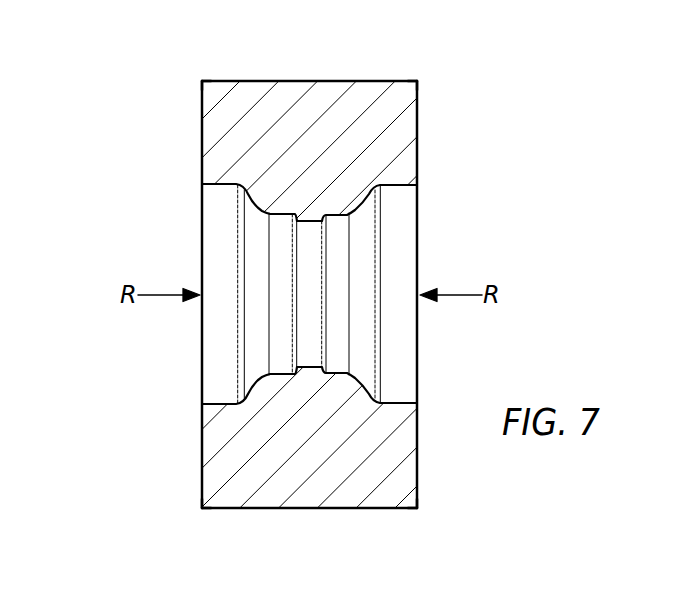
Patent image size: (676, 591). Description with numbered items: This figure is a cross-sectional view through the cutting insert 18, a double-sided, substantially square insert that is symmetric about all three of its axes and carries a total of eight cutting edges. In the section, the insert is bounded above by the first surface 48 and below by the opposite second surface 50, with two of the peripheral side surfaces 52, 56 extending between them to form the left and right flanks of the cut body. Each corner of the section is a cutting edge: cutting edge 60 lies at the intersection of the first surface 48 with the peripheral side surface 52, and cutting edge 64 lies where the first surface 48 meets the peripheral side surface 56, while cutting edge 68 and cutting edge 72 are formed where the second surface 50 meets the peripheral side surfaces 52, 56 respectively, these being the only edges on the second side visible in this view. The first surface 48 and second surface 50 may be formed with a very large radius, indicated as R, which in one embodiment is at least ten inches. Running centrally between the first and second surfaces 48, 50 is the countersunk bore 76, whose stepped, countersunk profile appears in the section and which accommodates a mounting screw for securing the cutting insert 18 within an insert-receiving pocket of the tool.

The cutting insert 18 is at (88, 175).
The first surface 48 is at (420, 155).
The second surface 50 is at (200, 142).
The peripheral side surface 52 is at (333, 72).
The peripheral side surface 56 is at (277, 510).
The cutting edge 60 is at (417, 80).
The cutting edge 64 is at (417, 508).
The cutting edge 68 is at (202, 80).
The cutting edge 72 is at (202, 508).
The countersunk bore 76 is at (395, 187).